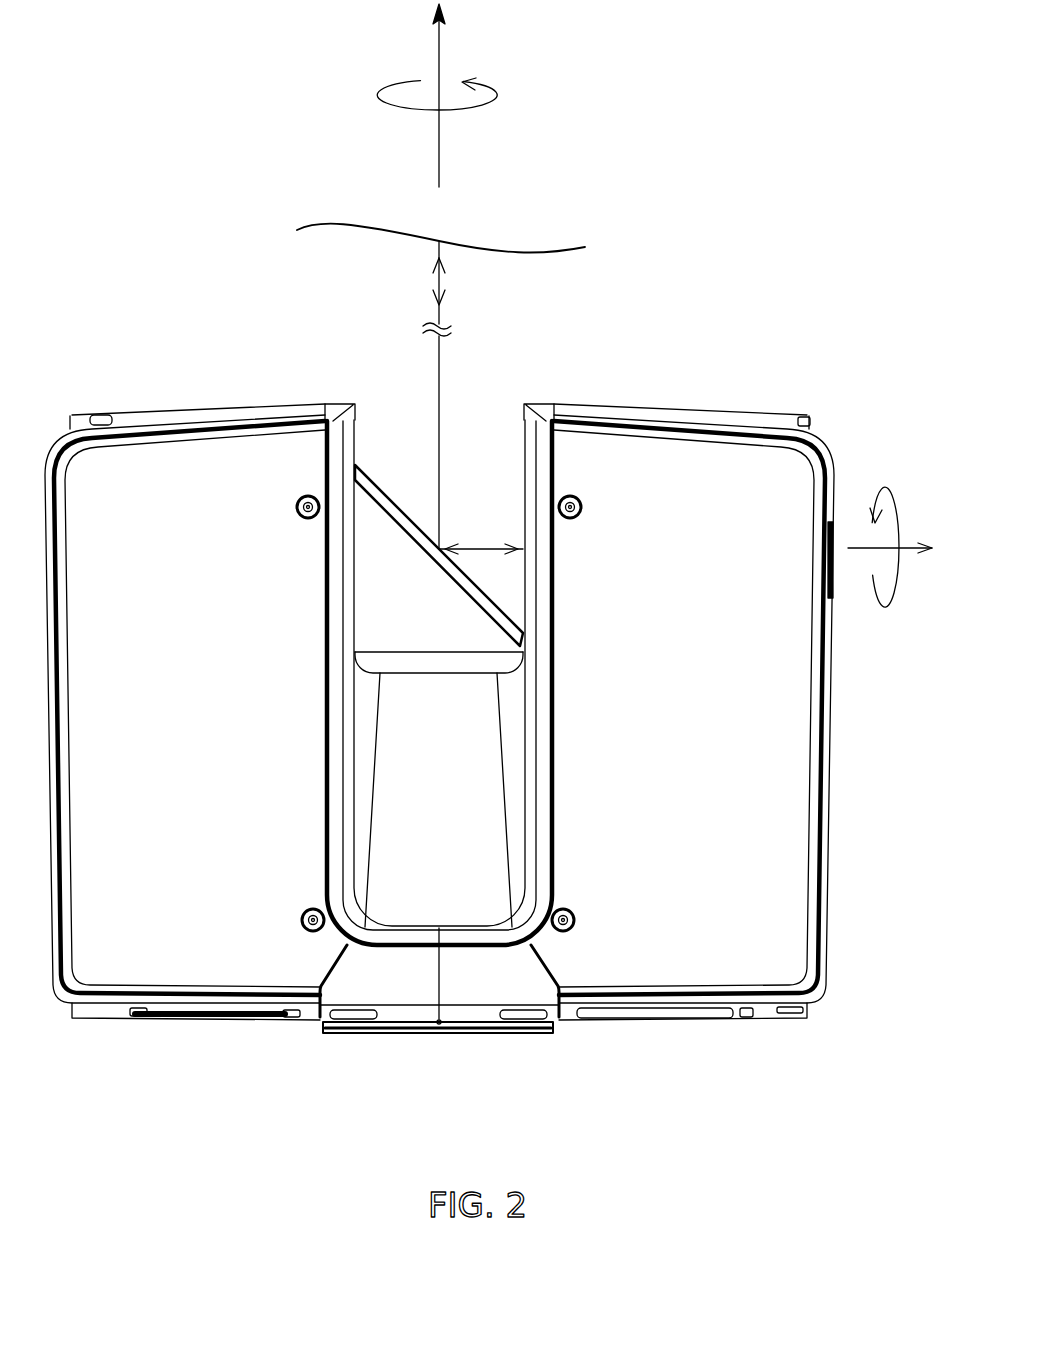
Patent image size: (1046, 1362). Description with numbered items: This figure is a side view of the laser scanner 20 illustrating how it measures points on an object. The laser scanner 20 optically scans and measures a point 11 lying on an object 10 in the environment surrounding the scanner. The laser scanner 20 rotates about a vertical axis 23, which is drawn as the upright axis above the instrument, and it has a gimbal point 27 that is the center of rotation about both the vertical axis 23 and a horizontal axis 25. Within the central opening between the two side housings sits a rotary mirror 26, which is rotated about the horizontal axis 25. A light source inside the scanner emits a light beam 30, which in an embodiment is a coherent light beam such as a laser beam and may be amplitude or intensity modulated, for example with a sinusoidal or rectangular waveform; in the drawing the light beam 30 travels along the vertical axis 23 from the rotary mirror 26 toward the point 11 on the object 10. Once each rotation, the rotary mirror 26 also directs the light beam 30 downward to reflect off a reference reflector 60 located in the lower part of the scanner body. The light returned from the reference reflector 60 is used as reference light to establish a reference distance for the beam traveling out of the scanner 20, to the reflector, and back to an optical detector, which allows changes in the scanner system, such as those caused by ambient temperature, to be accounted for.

The object 10 is at (543, 250).
The point 11 is at (432, 242).
The laser scanner 20 is at (134, 347).
The vertical axis 23 is at (440, 62).
The horizontal axis 25 is at (907, 545).
The rotary mirror 26 is at (372, 472).
The gimbal point 27 is at (441, 546).
The light beam 30 is at (441, 288).
The reference reflector 60 is at (457, 658).